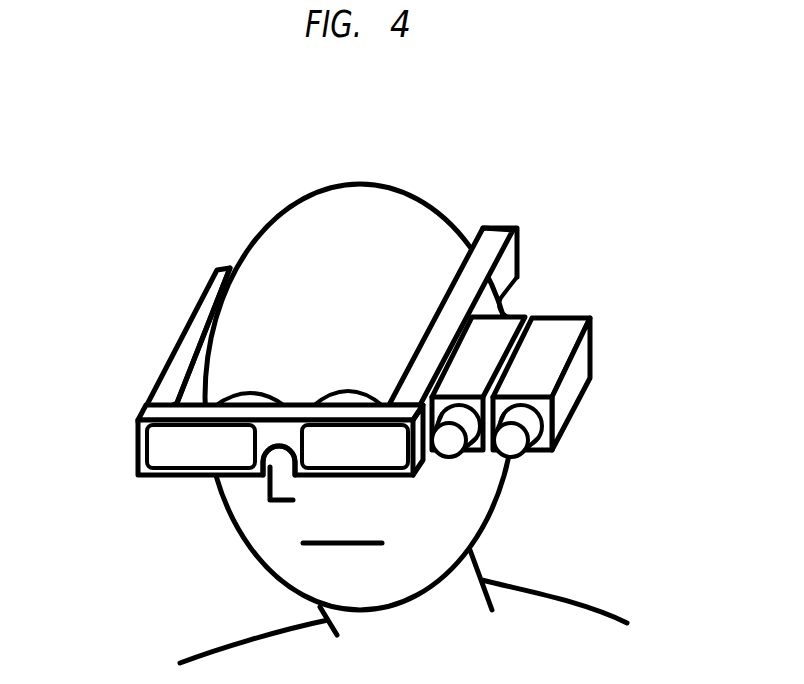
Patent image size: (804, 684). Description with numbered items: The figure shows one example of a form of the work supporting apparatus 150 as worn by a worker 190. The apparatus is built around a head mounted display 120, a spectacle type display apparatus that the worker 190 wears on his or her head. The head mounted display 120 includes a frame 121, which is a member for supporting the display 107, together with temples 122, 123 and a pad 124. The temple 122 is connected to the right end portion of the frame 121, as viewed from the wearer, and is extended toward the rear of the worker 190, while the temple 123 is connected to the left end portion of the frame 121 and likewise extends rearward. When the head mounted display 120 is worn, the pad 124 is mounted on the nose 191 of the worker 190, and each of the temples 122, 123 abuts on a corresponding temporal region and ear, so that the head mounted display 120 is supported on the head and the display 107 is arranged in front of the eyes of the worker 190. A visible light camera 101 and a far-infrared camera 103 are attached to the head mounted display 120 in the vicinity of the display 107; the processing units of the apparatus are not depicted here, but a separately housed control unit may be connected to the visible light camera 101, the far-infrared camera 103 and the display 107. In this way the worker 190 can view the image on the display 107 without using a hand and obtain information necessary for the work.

The work supporting apparatus 150 is at (620, 244).
The head mounted display 120 is at (139, 335).
The temple 122 is at (167, 362).
The temple 123 is at (502, 227).
The frame 121 is at (321, 487).
The worker 190 is at (412, 475).
The pad 124 is at (265, 463).
The display 107 is at (158, 461).
The nose 191 is at (270, 502).
The visible light camera 101 is at (521, 316).
The far-infrared camera 103 is at (593, 330).